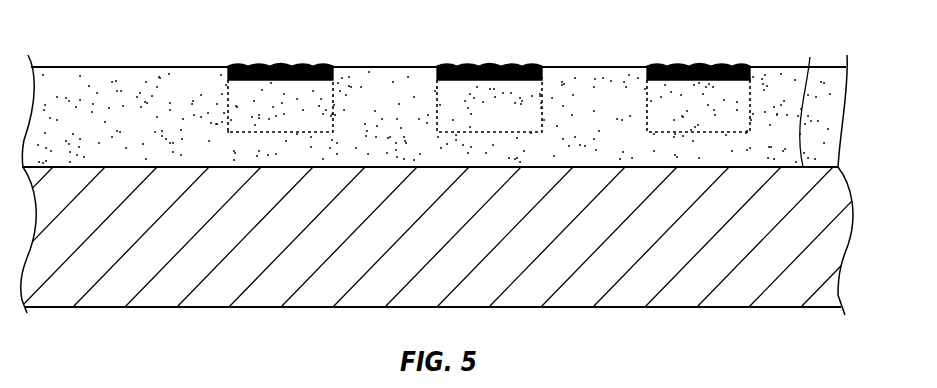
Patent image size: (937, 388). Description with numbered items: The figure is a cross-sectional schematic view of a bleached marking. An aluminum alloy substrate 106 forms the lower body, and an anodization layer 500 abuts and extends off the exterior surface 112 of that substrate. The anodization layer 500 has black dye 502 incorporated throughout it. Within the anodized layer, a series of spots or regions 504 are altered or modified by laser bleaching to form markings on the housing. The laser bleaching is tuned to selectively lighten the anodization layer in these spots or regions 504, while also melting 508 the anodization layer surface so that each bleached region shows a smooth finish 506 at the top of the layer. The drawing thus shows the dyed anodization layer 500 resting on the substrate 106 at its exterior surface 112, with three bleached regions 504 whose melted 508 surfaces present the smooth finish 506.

The anodization layer 500 is at (103, 128).
The black dye 502 is at (167, 80).
The spots or regions 504 is at (318, 88).
The smooth finish 506 is at (238, 62).
The melting 508 is at (277, 62).
The exterior surface 112 is at (805, 102).
The aluminum alloy substrate 106 is at (830, 248).